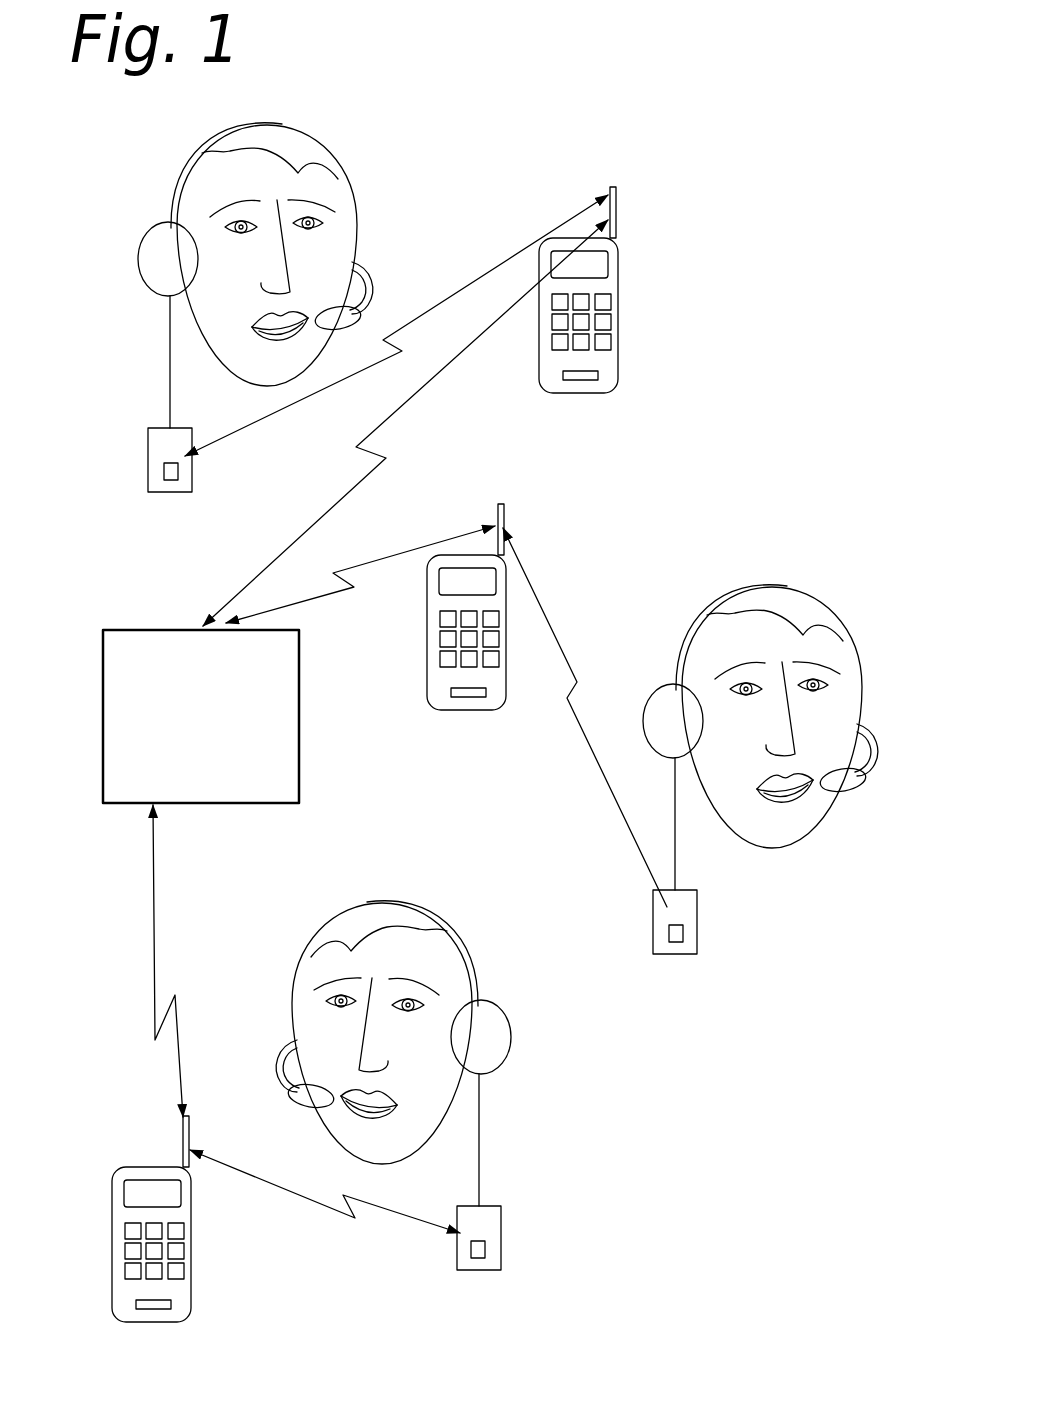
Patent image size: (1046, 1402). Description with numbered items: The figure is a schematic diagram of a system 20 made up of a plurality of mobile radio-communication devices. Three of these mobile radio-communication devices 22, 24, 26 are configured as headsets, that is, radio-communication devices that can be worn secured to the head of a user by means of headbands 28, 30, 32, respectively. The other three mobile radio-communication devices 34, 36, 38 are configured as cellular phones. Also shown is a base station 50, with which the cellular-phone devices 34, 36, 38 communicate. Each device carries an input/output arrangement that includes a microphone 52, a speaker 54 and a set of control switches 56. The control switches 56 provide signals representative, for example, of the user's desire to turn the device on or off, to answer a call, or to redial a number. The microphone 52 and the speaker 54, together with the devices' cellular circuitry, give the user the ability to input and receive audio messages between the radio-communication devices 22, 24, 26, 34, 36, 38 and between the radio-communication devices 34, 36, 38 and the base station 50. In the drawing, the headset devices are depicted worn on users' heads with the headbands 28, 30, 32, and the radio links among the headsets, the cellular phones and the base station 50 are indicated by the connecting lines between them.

The system 20 is at (757, 232).
The mobile radio-communication device 22 is at (126, 344).
The mobile radio-communication device 24 is at (688, 610).
The mobile radio-communication device 26 is at (527, 1033).
The headband 28 is at (252, 128).
The headband 30 is at (752, 588).
The headband 32 is at (420, 906).
The mobile radio-communication device 34 is at (594, 414).
The mobile radio-communication device 36 is at (520, 714).
The mobile radio-communication device 38 is at (194, 1278).
The base station 50 is at (180, 767).
The microphone 52 is at (340, 318).
The speaker 54 is at (158, 258).
The control switches 56 is at (172, 472).